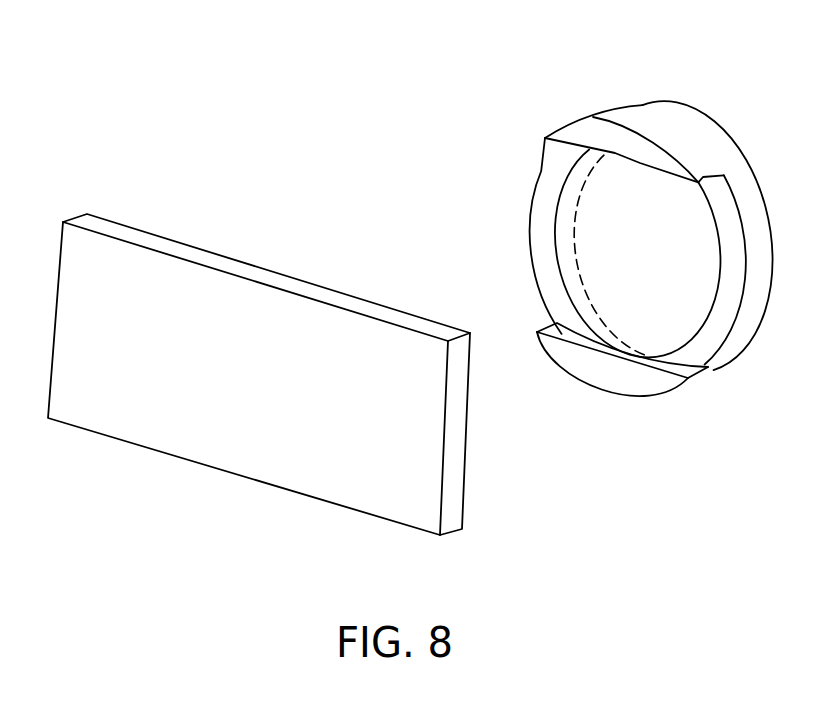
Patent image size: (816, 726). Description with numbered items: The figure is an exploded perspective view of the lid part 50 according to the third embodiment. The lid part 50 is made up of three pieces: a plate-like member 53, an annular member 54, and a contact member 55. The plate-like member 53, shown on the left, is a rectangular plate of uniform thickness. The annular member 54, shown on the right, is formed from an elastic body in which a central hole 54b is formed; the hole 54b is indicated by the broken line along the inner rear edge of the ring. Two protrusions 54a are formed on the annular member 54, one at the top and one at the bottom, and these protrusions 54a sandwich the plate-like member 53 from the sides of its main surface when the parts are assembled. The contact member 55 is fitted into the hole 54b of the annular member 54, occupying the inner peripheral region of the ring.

The lid part 50 is at (328, 157).
The plate-like member 53 is at (437, 433).
The annular member 54 is at (600, 244).
The protrusions 54a is at (600, 133).
The hole 54b is at (582, 237).
The contact member 55 is at (612, 272).